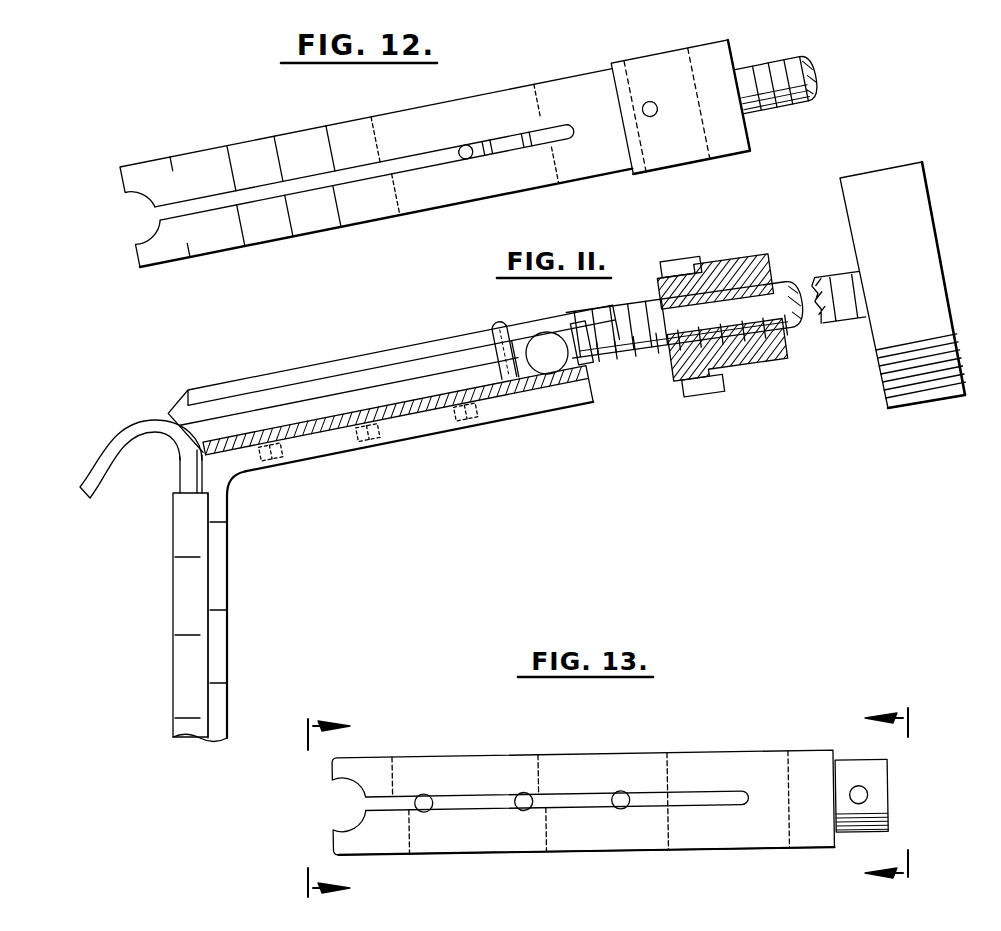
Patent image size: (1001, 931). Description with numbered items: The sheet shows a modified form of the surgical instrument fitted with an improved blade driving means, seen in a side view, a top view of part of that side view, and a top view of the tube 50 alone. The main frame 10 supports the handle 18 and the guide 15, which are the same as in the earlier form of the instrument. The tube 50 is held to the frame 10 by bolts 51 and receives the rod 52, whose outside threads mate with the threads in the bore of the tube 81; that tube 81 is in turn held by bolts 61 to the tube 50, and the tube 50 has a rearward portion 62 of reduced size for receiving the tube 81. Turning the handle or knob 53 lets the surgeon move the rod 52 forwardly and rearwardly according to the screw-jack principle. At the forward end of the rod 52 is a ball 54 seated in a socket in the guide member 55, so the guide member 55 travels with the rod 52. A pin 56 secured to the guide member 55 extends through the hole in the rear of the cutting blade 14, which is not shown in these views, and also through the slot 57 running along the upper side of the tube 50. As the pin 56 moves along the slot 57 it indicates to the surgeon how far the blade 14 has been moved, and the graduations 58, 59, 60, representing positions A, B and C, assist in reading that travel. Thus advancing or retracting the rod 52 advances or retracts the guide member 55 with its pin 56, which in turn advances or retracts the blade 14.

In FIG. 11, the main frame 10 is at (402, 428).
In FIG. 13, the cutting blade 14 is at (876, 799).
In FIG. 11, the guide 15 is at (127, 448).
In FIG. 13, the guide 15 is at (339, 808).
In FIG. 11, the handle 18 is at (185, 637).
In FIG. 12, the tube 50 is at (477, 117).
In FIG. 11, the tube 50 is at (375, 352).
In FIG. 13, the tube 50 is at (577, 838).
In FIG. 11, the bolts 51 is at (368, 446).
In FIG. 12, the rod 52 is at (776, 72).
In FIG. 11, the rod 52 is at (847, 302).
In FIG. 11, the knob 53 is at (873, 226).
In FIG. 11, the ball 54 is at (571, 381).
In FIG. 11, the guide member 55 is at (524, 374).
In FIG. 11, the pin 56 is at (496, 348).
In FIG. 12, the slot 57 is at (383, 167).
In FIG. 13, the slot 57 is at (568, 795).
In FIG. 12, the graduation 58 is at (338, 214).
In FIG. 12, the graduation 59 is at (292, 224).
In FIG. 12, the graduation 60 is at (247, 230).
In FIG. 11, the bolts 61 is at (679, 261).
In FIG. 11, the rearward portion 62 is at (675, 358).
In FIG. 13, the rearward portion 62 is at (870, 778).
In FIG. 12, the tube 81 is at (722, 128).
In FIG. 11, the tube 81 is at (752, 260).